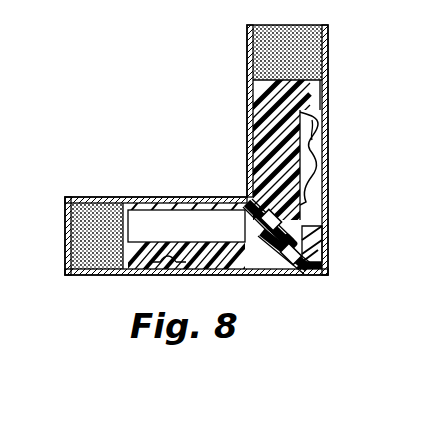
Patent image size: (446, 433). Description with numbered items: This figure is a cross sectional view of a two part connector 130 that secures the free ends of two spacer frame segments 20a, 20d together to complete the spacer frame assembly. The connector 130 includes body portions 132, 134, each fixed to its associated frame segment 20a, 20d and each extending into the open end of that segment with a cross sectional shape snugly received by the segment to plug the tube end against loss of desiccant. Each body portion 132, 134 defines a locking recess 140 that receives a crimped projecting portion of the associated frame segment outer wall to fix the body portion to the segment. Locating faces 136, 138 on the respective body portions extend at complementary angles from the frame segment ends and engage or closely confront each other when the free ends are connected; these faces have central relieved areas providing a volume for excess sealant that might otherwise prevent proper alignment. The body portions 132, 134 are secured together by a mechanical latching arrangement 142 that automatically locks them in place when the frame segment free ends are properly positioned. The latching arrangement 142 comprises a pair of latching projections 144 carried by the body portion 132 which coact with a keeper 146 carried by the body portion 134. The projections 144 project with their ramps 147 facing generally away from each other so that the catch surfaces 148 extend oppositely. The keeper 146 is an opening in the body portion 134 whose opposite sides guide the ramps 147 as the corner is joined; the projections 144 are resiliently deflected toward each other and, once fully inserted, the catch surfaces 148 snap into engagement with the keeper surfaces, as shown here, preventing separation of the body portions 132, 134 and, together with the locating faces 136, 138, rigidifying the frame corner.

The frame member 20a is at (247, 52).
The frame member 20d is at (92, 197).
The two part connector 130 is at (318, 303).
The body portion 132 is at (263, 279).
The body portion 134 is at (322, 180).
The locating face 136 is at (322, 258).
The locating face 138 is at (311, 278).
The locking recess 140 is at (328, 103).
The mechanical latching arrangement 142 is at (236, 160).
The latching projection 144 is at (268, 198).
The keeper 146 is at (236, 229).
The ramp 147 is at (232, 183).
The catch surface 148 is at (238, 196).